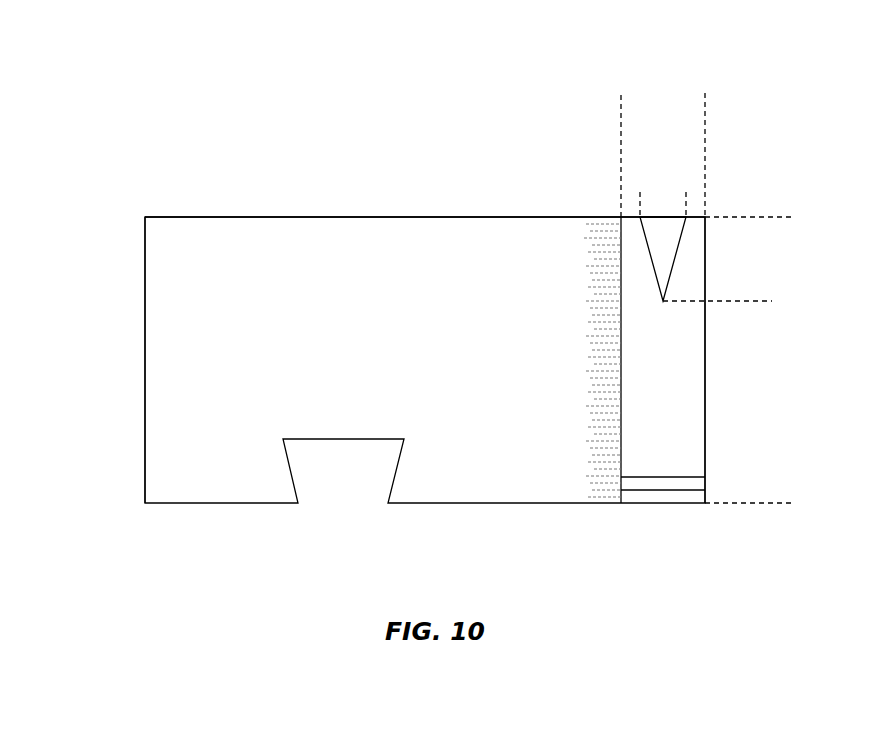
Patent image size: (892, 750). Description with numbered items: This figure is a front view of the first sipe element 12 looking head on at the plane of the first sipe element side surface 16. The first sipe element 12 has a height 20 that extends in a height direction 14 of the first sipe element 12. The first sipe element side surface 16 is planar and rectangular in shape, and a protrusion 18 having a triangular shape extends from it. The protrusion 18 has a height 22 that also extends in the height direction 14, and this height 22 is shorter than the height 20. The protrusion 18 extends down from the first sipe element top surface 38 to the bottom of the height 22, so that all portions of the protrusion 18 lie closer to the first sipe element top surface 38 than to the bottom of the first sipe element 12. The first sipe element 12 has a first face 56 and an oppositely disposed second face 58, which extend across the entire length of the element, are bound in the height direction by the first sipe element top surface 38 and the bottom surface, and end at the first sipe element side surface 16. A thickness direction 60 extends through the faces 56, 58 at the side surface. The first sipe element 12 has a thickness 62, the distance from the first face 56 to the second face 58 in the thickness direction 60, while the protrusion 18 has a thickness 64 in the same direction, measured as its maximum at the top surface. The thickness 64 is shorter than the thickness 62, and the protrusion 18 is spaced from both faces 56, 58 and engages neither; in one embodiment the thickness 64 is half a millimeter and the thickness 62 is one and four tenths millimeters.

The first sipe element 12 is at (230, 196).
The height direction 14 is at (114, 419).
The first sipe element side surface 16 is at (657, 441).
The protrusion 18 is at (655, 258).
The height 20 is at (784, 219).
The height 22 is at (758, 219).
The first sipe element top surface 38 is at (364, 213).
The first face 56 is at (613, 348).
The second face 58 is at (714, 243).
The thickness direction 60 is at (741, 40).
The thickness 62 is at (703, 124).
The thickness 64 is at (684, 205).